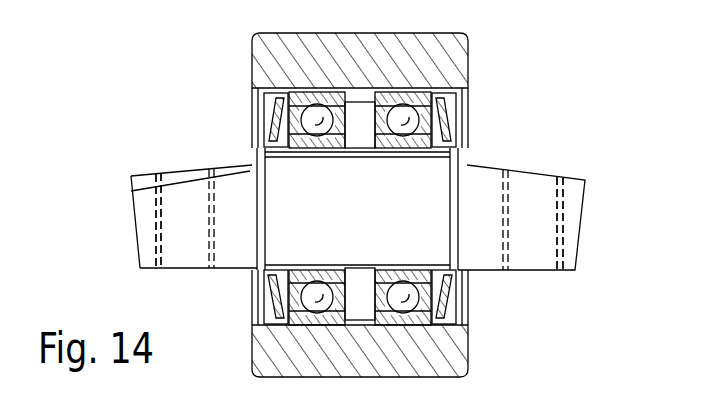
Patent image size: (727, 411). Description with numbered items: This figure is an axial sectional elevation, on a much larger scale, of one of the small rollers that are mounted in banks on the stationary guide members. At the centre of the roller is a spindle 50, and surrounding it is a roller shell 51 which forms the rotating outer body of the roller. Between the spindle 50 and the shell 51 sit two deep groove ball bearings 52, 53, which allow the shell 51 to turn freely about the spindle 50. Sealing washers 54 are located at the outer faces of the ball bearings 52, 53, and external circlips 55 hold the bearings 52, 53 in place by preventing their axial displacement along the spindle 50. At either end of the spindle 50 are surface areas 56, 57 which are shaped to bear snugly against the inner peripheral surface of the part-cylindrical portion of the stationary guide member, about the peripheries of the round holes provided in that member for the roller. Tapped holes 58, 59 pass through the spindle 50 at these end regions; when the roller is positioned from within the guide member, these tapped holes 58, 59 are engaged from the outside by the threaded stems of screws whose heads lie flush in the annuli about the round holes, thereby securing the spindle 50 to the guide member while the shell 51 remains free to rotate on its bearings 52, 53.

The spindle 50 is at (140, 205).
The roller shell 51 is at (363, 42).
The deep groove ball bearing 52 is at (317, 108).
The deep groove ball bearing 53 is at (403, 113).
The sealing washer 54 is at (272, 300).
The external circlip 55 is at (262, 148).
The surface area 56 is at (197, 168).
The surface area 57 is at (546, 167).
The tapped hole 58 is at (157, 243).
The tapped hole 59 is at (576, 255).